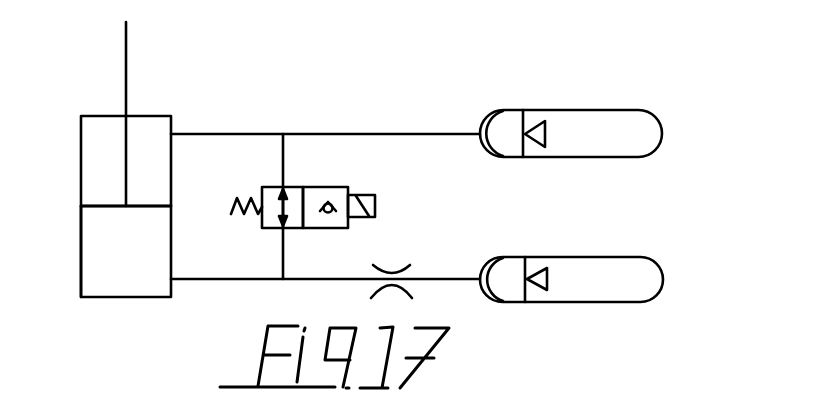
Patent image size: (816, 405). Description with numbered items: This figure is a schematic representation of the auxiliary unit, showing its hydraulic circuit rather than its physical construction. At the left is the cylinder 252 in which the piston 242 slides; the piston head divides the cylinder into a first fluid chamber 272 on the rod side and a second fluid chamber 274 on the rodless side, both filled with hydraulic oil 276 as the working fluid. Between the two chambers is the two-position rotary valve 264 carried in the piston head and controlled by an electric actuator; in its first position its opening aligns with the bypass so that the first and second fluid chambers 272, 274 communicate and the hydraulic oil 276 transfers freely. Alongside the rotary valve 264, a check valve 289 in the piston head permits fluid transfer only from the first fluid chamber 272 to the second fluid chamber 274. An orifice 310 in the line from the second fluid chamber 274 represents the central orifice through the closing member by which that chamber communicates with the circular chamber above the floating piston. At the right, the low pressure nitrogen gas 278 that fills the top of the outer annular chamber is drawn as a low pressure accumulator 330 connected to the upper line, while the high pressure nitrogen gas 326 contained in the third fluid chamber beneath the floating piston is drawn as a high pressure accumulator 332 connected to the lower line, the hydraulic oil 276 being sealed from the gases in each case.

The piston 242 is at (98, 209).
The cylinder 252 is at (82, 270).
The two-position rotary valve 264 is at (296, 187).
The first fluid chamber 272 is at (103, 128).
The second fluid chamber 274 is at (132, 283).
The hydraulic oil 276 is at (507, 145).
The low pressure nitrogen gas 278 is at (623, 135).
The check valve 289 is at (325, 214).
The orifice 310 is at (392, 272).
The high pressure nitrogen gas 326 is at (590, 285).
The low pressure accumulator 330 is at (590, 110).
The high pressure accumulator 332 is at (607, 255).